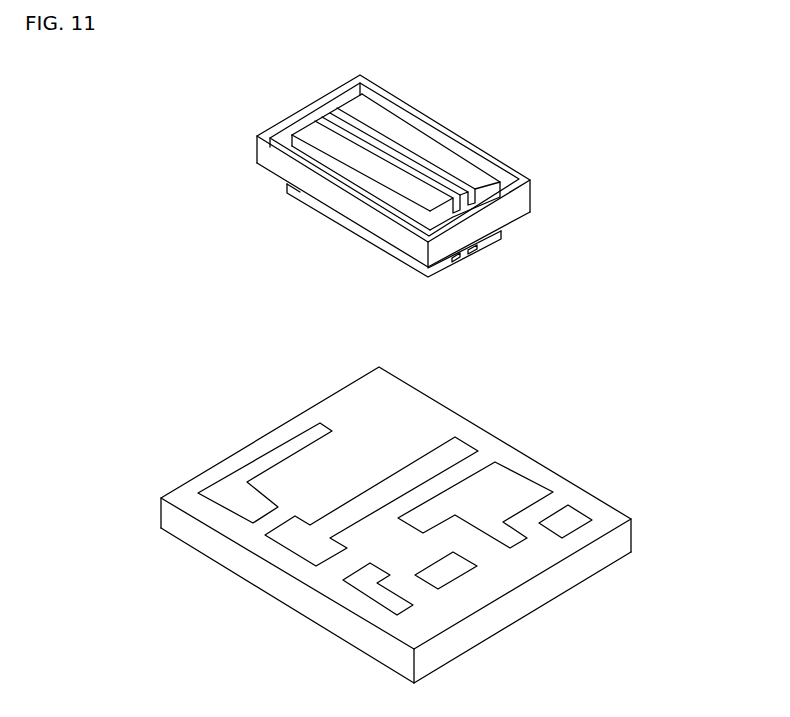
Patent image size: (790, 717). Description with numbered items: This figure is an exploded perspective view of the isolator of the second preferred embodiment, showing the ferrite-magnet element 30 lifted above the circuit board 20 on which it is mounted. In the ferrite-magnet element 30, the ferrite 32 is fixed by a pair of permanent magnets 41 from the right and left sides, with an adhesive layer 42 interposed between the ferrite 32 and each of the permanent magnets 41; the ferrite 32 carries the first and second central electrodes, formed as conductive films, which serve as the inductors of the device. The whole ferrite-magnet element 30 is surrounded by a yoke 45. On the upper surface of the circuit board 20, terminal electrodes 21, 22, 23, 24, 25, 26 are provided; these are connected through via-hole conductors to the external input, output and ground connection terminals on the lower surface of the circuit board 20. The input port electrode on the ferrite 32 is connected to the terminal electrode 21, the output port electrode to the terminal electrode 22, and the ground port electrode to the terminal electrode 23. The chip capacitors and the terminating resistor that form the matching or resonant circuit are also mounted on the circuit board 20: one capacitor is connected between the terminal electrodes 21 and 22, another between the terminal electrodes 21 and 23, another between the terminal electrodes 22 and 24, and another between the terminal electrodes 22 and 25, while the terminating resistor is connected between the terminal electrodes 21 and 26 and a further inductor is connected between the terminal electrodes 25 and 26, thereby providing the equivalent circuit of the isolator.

The circuit board 20 is at (412, 395).
The terminal electrode 21 is at (468, 447).
The terminal electrode 22 is at (523, 480).
The terminal electrode 23 is at (302, 440).
The terminal electrode 24 is at (580, 515).
The terminal electrode 25 is at (453, 575).
The terminal electrode 26 is at (373, 593).
The ferrite-magnet element 30 is at (390, 146).
The ferrite 32 is at (328, 117).
The permanent magnet 41 is at (305, 133).
The adhesive layer 42 is at (392, 142).
The yoke 45 is at (503, 173).